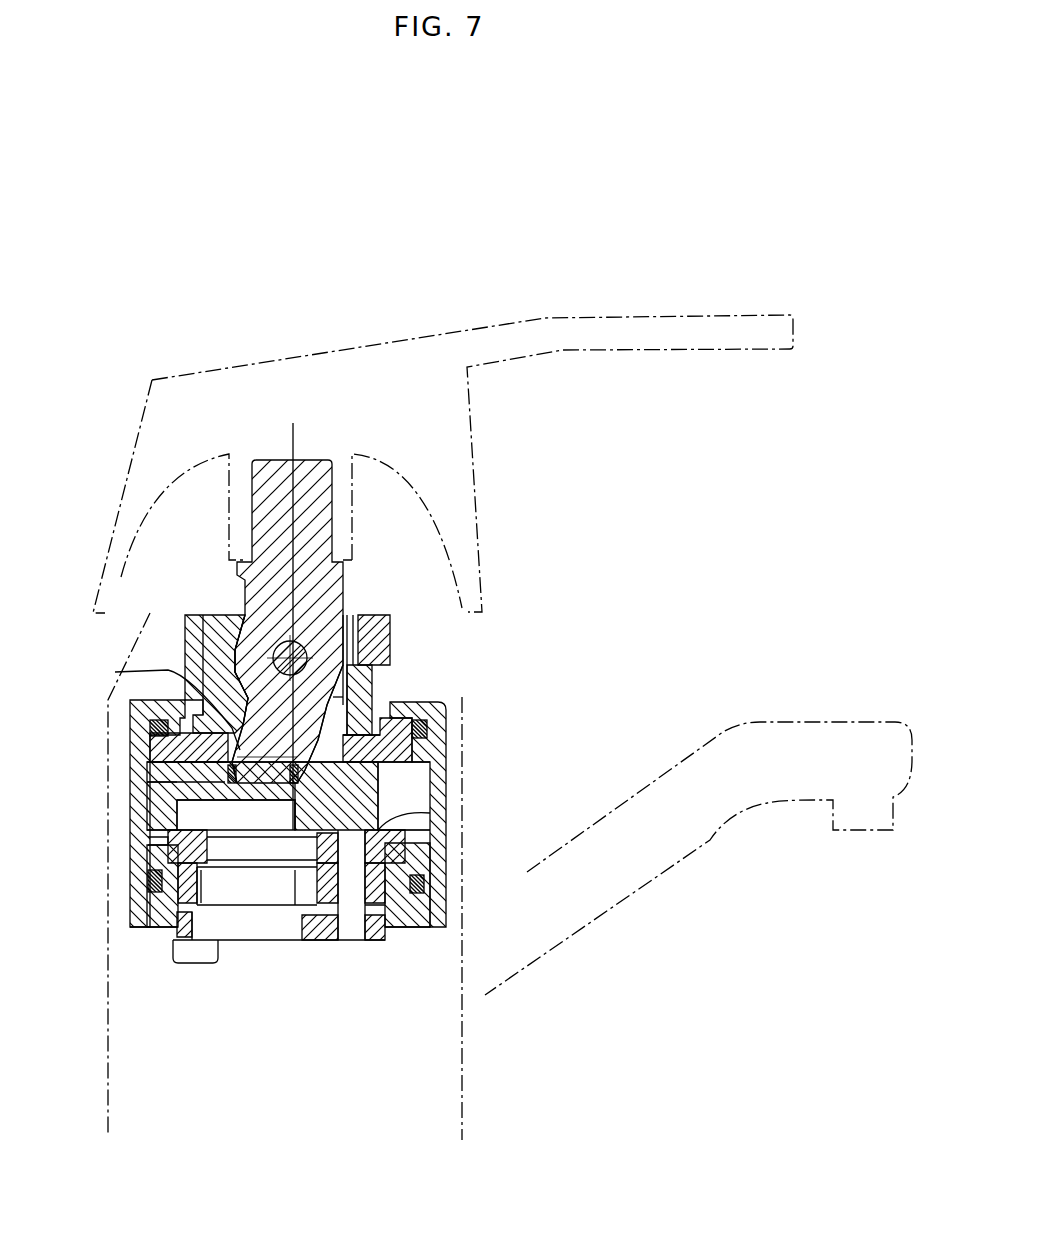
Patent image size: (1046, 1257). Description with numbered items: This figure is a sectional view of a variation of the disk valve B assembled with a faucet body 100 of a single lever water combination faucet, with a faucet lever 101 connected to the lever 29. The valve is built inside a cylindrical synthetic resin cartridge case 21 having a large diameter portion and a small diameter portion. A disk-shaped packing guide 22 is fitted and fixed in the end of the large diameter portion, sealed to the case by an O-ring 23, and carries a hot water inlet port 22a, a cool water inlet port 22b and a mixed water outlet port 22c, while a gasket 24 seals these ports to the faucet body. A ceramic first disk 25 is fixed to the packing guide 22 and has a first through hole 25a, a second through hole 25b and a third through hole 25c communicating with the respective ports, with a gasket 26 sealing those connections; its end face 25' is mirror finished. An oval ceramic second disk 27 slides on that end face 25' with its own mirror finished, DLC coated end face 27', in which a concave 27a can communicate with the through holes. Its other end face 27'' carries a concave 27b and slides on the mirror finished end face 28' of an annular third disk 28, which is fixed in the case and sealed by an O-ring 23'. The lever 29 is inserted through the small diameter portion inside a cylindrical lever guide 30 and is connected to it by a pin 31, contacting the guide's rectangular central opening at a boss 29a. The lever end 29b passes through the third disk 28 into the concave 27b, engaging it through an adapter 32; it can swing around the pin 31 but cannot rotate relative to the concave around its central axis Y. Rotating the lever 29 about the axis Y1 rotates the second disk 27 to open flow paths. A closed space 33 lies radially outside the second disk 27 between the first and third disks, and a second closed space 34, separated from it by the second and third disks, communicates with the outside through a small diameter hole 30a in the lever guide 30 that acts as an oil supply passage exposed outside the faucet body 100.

The faucet lever 101 is at (533, 316).
The faucet body 100 is at (105, 1012).
The axis Y1 is at (293, 442).
The central axis Y is at (169, 705).
The disk valve B is at (405, 650).
The lever 29 is at (335, 585).
The boss 29a is at (235, 650).
The end 29b is at (243, 757).
The lever guide 30 is at (212, 670).
The small diameter hole 30a is at (395, 630).
The pin 31 is at (302, 645).
The adapter 32 is at (150, 743).
The second disk 27 is at (205, 796).
The concave 27a is at (205, 810).
The concave 27b is at (185, 767).
The end face 27' is at (110, 858).
The other end face 27'' is at (399, 667).
The third disk 28 is at (424, 736).
The end face 28' is at (447, 807).
The cartridge case 21 is at (440, 767).
The O-ring 23 is at (457, 895).
The O-ring 23' is at (457, 704).
The closed space 33 is at (400, 815).
The second closed space 34 is at (322, 745).
The first disk 25 is at (335, 859).
The end face 25' is at (448, 838).
The first through hole 25a is at (451, 890).
The second through hole 25b is at (351, 885).
The third through hole 25c is at (152, 862).
The packing guide 22 is at (405, 917).
The hot water inlet port 22a is at (387, 966).
The cool water inlet port 22b is at (345, 935).
The mixed water outlet port 22c is at (248, 895).
The gasket 24 is at (185, 940).
The gasket 26 is at (165, 905).